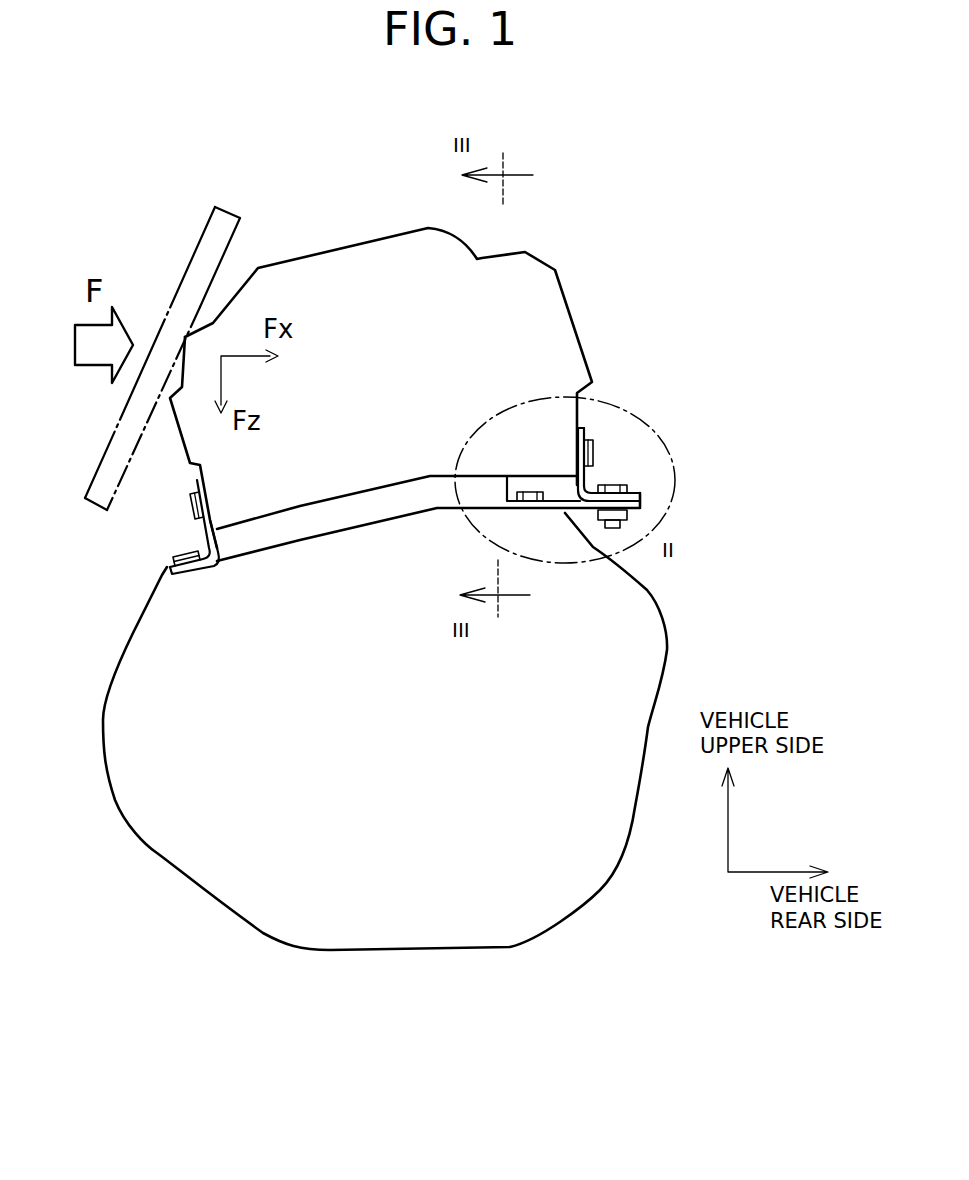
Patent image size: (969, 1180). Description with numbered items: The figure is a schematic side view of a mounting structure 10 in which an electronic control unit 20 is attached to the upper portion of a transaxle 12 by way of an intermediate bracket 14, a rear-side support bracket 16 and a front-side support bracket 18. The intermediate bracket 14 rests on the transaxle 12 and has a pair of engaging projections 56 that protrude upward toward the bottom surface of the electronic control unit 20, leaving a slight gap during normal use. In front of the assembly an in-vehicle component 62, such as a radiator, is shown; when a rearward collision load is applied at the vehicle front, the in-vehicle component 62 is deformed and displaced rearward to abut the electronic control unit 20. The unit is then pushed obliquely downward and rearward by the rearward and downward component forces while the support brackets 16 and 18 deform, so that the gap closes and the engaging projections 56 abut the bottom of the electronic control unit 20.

The mounting structure 10 is at (693, 348).
The transaxle 12 is at (197, 860).
The intermediate bracket 14 is at (555, 510).
The rear-side support bracket 16 is at (585, 478).
The front-side support bracket 18 is at (212, 538).
The electronic control unit 20 is at (345, 267).
The engaging projections 56 is at (497, 478).
The in-vehicle component 62 is at (198, 265).